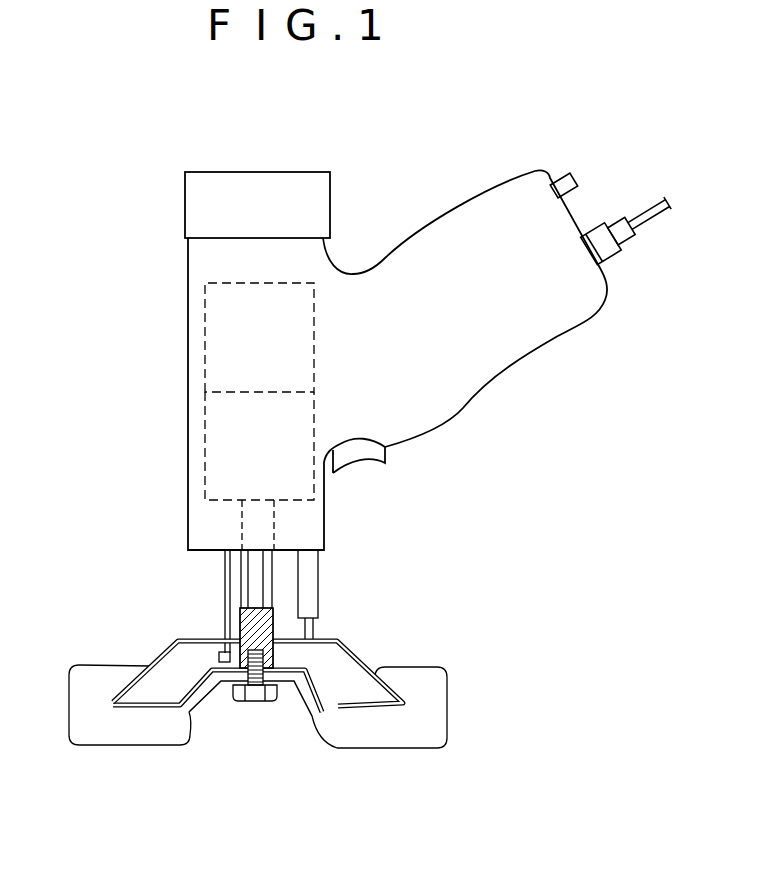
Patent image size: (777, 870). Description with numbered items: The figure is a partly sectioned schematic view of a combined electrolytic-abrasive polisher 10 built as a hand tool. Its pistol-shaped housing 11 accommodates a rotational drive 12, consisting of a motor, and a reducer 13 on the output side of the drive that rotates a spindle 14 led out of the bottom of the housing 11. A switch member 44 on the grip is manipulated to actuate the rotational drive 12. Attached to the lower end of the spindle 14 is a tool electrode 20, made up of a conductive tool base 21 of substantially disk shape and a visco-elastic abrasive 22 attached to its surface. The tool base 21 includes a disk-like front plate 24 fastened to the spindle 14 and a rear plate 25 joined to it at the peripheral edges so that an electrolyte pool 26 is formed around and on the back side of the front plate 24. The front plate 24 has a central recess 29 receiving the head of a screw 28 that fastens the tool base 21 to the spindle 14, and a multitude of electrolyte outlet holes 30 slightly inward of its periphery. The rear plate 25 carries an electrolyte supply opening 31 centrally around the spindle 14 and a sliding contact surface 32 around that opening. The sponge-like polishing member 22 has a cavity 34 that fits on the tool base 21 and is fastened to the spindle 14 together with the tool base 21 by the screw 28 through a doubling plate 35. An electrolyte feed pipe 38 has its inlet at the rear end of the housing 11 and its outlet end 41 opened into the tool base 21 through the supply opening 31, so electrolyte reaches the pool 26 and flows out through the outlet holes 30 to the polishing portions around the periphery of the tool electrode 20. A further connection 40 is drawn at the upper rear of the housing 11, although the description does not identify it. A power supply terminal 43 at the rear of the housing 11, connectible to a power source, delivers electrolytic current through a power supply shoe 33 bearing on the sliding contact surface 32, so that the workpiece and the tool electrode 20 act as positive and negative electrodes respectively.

The electrolytic-abrasive polisher 10 is at (112, 236).
The pistol-shaped housing 11 is at (188, 350).
The rotational drive 12 is at (208, 300).
The reducer 13 is at (207, 443).
The spindle 14 is at (267, 568).
The tool electrode 20 is at (63, 624).
The tool base 21 is at (367, 650).
The visco-elastic abrasive 22 is at (420, 746).
The front plate 24 is at (127, 708).
The rear plate 25 is at (178, 640).
The electrolyte pool 26 is at (148, 693).
The screw 28 is at (255, 703).
The recess 29 is at (293, 692).
The electrolyte outlet holes 30 is at (162, 712).
The electrolyte supply opening 31 is at (222, 634).
The sliding contact surface 32 is at (336, 646).
The power supply shoe 33 is at (313, 630).
The cavity 34 is at (382, 697).
The doubling plate 35 is at (207, 701).
The electrolyte feed pipe 38 is at (225, 575).
The electrical connector 40 is at (576, 177).
The outlet end 41 is at (237, 655).
The power supply terminal 43 is at (614, 258).
The switch member 44 is at (367, 457).